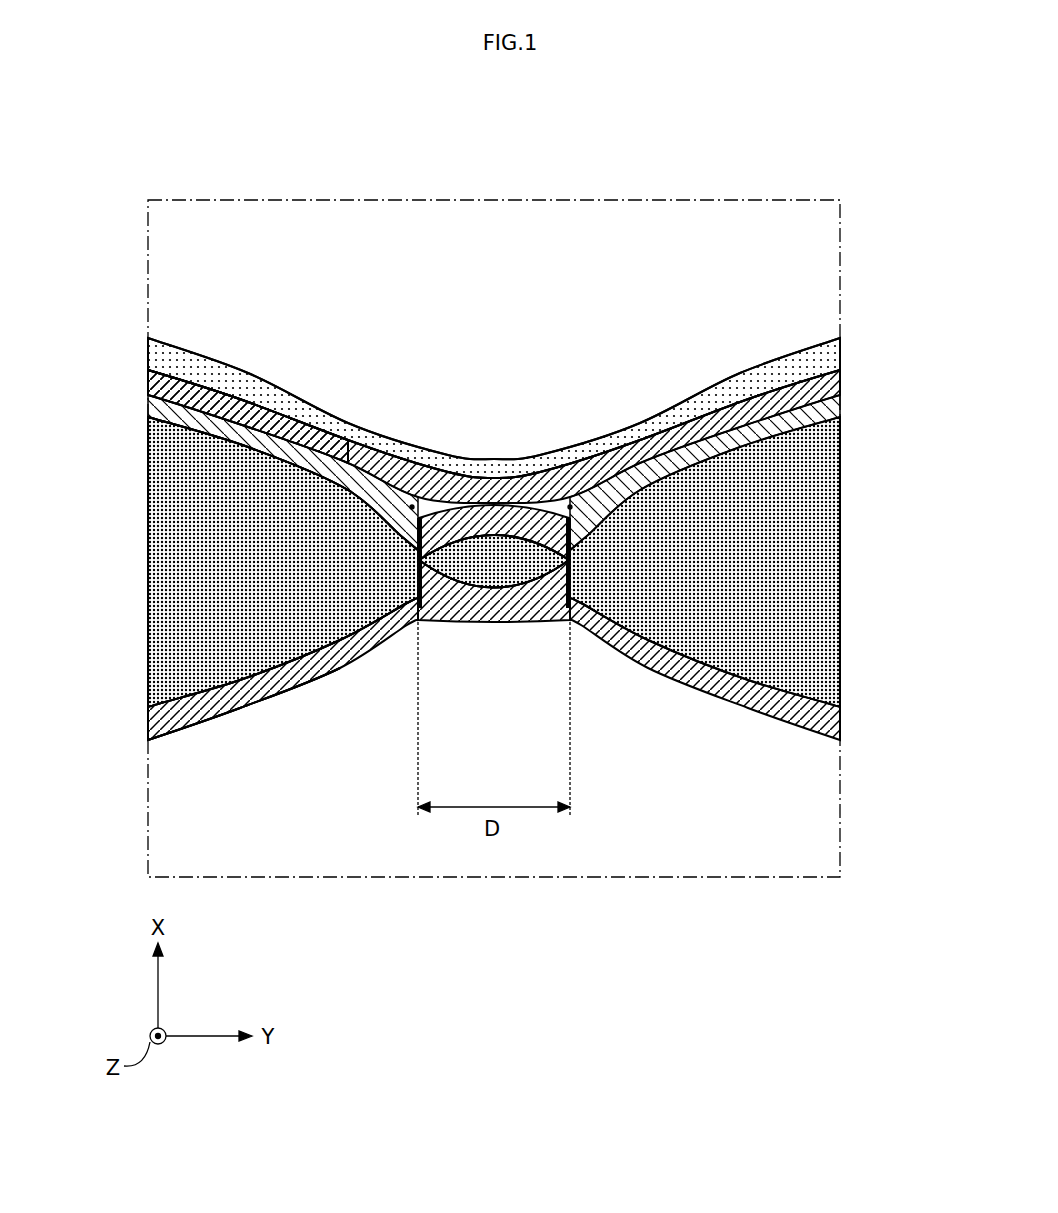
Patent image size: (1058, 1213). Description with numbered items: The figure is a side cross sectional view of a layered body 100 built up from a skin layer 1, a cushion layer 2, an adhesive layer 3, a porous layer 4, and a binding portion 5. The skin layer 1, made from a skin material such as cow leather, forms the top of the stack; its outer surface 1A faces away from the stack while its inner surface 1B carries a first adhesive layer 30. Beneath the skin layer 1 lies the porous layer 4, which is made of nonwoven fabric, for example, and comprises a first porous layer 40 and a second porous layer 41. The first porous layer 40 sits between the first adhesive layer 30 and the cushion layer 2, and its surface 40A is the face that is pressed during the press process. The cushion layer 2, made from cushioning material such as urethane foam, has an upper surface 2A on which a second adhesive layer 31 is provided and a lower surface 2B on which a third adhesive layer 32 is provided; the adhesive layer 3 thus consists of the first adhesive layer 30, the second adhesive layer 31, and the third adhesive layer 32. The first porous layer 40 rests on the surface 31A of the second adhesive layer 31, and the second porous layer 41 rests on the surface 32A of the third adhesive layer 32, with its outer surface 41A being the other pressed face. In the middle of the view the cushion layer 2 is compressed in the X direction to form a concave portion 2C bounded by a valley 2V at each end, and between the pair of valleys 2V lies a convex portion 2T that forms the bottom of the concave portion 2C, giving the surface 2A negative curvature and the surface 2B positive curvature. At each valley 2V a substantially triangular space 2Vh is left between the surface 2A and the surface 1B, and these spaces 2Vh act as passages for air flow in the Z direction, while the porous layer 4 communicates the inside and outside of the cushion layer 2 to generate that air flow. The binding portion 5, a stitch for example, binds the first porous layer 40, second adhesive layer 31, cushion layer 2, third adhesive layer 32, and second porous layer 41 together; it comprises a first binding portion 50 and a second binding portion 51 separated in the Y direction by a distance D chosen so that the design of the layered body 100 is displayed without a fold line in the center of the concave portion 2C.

The layered body 100 is at (662, 330).
The skin layer 1 is at (287, 403).
The surface of skin layer 1A is at (813, 347).
The surface of skin layer 1B is at (748, 408).
The cushion layer 2 is at (240, 613).
The surface of cushion layer 2A is at (352, 500).
The surface of cushion layer 2B is at (303, 653).
The concave portion 2C is at (455, 525).
The convex portion 2T is at (493, 534).
The valley 2V is at (419, 518).
The space 2Vh is at (412, 507).
The adhesive layer 3 is at (922, 492).
The first adhesive layer 30 is at (842, 375).
The second adhesive layer 31 is at (842, 410).
The surface of second adhesive layer 31A is at (205, 420).
The third adhesive layer 32 is at (842, 717).
The surface of third adhesive layer 32A is at (207, 722).
The porous layer 4 is at (78, 492).
The first porous layer 40 is at (147, 397).
The surface of first porous layer 40A is at (147, 368).
The second porous layer 41 is at (147, 712).
The surface of second porous layer 41A is at (148, 740).
The binding portion 5 is at (440, 727).
The first binding portion 50 is at (445, 718).
The second binding portion 51 is at (544, 718).